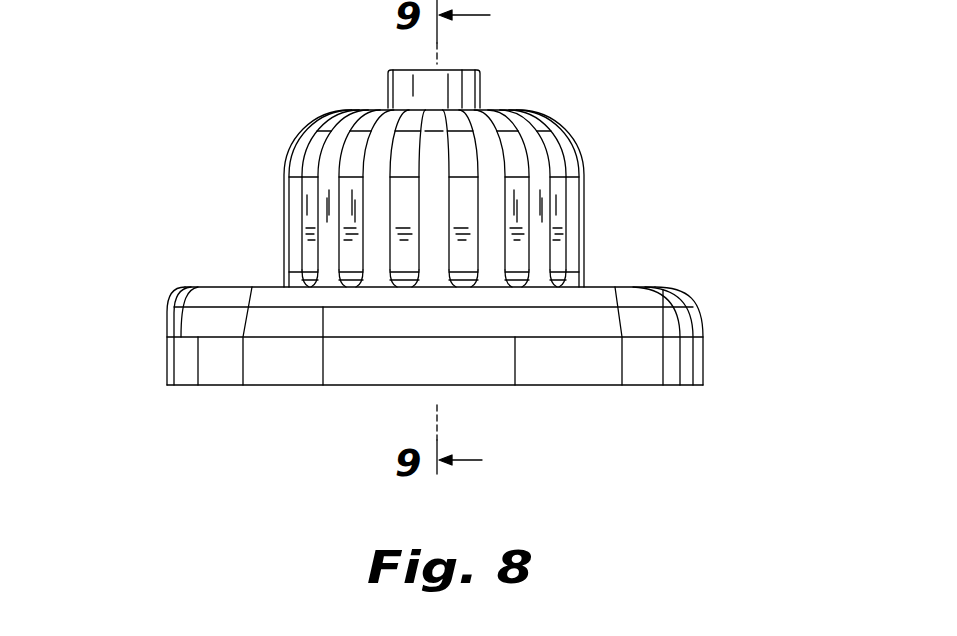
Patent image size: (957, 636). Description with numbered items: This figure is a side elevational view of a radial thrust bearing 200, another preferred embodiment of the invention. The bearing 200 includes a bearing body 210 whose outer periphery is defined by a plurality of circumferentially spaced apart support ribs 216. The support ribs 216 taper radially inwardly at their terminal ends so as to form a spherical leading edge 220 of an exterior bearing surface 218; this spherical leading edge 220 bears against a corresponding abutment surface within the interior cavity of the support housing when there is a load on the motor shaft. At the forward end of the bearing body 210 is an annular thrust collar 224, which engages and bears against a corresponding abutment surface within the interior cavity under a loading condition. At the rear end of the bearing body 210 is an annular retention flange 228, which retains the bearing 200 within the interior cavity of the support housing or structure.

The radial thrust bearing 200 is at (680, 132).
The bearing body 210 is at (556, 253).
The support ribs 216 is at (433, 238).
The exterior bearing surface 218 is at (408, 250).
The spherical leading edge 220 is at (295, 152).
The annular thrust collar 224 is at (472, 86).
The annular retention flange 228 is at (168, 337).